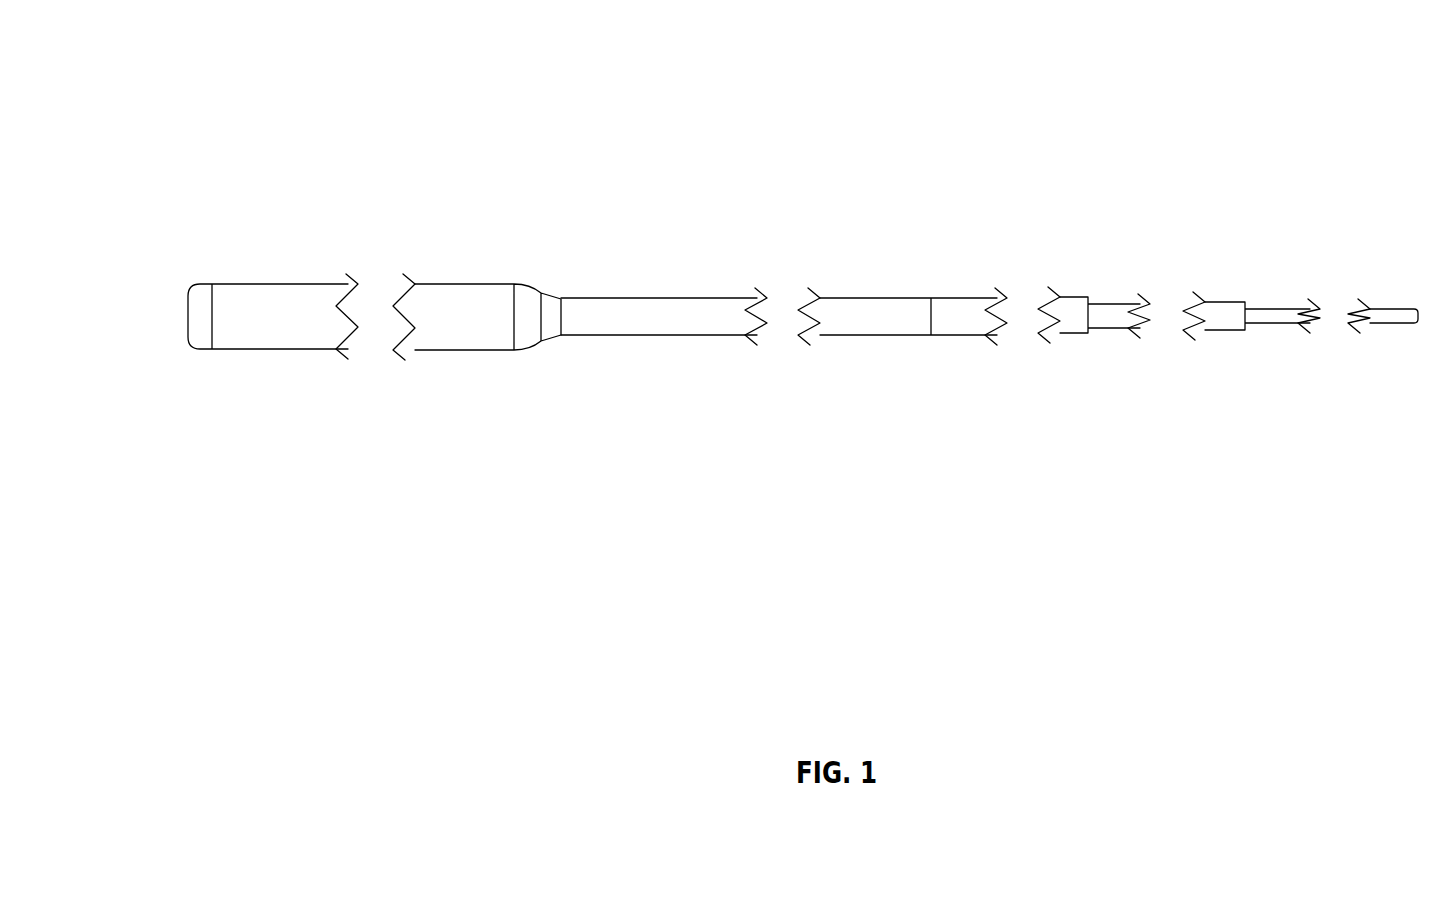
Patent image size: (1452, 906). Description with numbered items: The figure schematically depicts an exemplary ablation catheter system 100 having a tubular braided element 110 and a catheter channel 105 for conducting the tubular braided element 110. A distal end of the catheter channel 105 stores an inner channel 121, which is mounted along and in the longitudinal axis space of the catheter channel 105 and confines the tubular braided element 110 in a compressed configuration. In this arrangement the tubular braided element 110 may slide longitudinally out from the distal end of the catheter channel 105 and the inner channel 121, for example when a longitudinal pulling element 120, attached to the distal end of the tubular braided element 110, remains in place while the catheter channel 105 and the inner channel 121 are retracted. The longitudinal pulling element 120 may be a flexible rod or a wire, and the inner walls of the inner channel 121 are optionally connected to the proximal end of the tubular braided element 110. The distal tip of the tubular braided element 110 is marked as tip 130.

The ablation catheter system 100 is at (866, 125).
The catheter channel 105 is at (614, 288).
The tubular braided element 110 is at (449, 265).
The longitudinal pulling element 120 is at (1258, 289).
The inner channel 121 is at (1094, 287).
The tip 130 is at (171, 307).